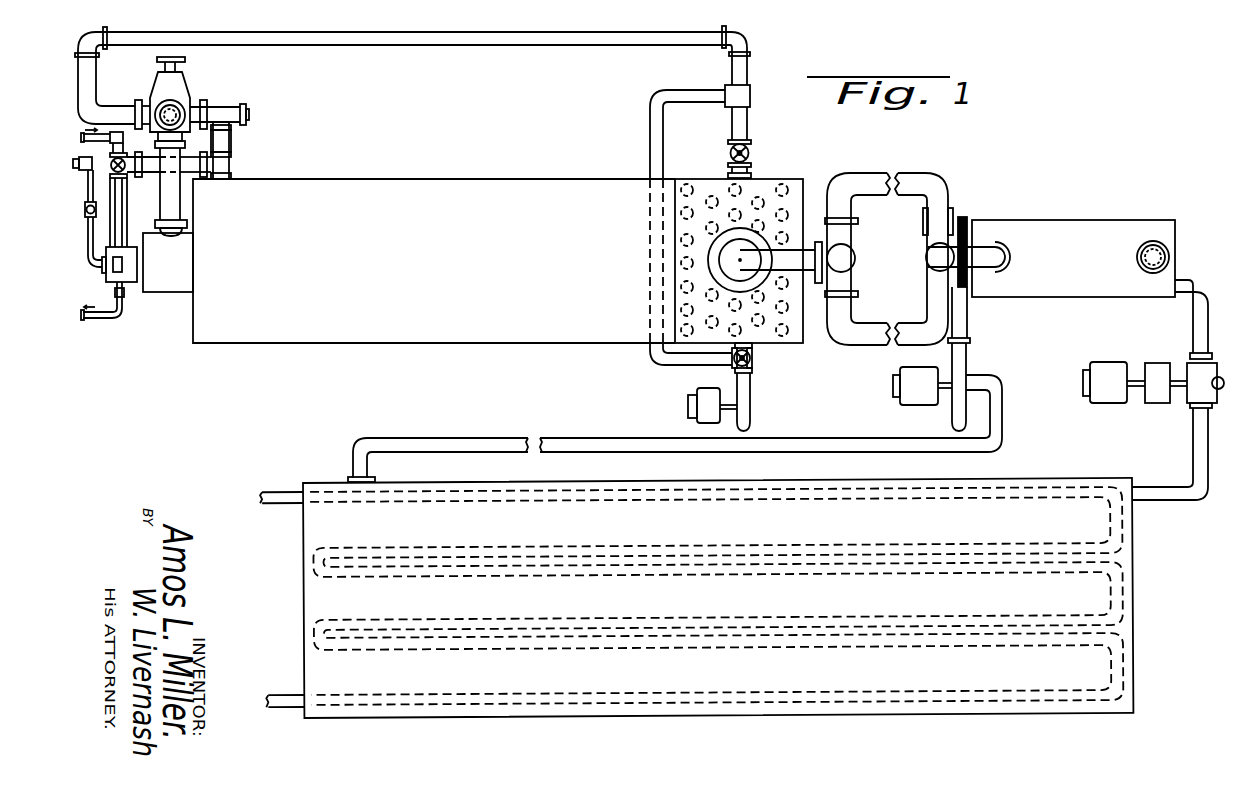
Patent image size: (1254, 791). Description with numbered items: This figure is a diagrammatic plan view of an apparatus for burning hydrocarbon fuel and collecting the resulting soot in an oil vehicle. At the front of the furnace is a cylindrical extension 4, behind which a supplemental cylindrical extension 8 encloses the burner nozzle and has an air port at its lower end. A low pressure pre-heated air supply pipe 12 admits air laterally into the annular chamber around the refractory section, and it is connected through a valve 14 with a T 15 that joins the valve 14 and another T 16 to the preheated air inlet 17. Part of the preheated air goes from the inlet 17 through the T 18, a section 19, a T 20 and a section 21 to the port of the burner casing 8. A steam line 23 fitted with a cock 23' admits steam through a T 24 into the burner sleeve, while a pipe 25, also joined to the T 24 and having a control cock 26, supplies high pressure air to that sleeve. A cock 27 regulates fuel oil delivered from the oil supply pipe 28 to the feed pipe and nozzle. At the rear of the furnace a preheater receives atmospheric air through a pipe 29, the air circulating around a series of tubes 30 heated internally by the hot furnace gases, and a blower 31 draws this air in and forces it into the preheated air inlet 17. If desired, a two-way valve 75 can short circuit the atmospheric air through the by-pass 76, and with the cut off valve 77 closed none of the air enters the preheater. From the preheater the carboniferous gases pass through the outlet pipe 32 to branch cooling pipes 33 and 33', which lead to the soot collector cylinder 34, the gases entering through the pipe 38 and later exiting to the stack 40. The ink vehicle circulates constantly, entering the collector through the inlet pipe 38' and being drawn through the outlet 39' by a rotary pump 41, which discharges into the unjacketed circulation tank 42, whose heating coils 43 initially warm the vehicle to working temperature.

The cylindrical extension 4 is at (185, 284).
The supplemental cylindrical extension 8 is at (138, 276).
The low pressure pre-heated air supply pipe 12 is at (181, 212).
The valve 14 is at (160, 87).
The T 15 is at (196, 106).
The T 16 is at (226, 106).
The preheated air inlet 17 is at (230, 141).
The T 18 is at (231, 163).
The section 19 is at (195, 168).
The T 20 is at (110, 163).
The section 21 is at (126, 193).
The steam line 23 is at (143, 304).
The cock 23' is at (129, 322).
The T 24 is at (140, 265).
The pipe 25 is at (126, 213).
The control cock 26 is at (127, 160).
The cock 27 is at (87, 256).
The oil supply pipe 28 is at (81, 177).
The pipe 29 is at (751, 410).
The tubes 30 is at (710, 190).
The blower 31 is at (773, 365).
The outlet pipe 32 is at (800, 245).
The branch cooling pipe 33 is at (912, 242).
The branch cooling pipe 33' is at (867, 259).
The cylinder 34 is at (1074, 232).
The pipe 38 is at (977, 269).
The inlet pipe 38' is at (956, 324).
The outlet 39' is at (1187, 319).
The stack 40 is at (1170, 258).
The rotary pump 41 is at (1210, 388).
The circulation tank 42 is at (1072, 477).
The heating coils 43 is at (858, 617).
The two-way valve 75 is at (751, 362).
The by-pass 76 is at (652, 163).
The cut off valve 77 is at (752, 153).